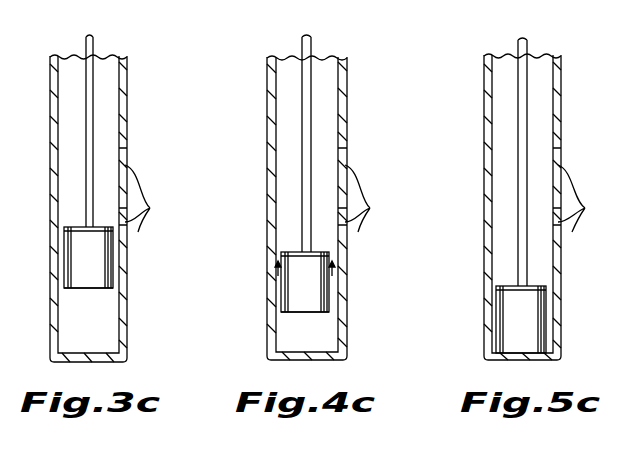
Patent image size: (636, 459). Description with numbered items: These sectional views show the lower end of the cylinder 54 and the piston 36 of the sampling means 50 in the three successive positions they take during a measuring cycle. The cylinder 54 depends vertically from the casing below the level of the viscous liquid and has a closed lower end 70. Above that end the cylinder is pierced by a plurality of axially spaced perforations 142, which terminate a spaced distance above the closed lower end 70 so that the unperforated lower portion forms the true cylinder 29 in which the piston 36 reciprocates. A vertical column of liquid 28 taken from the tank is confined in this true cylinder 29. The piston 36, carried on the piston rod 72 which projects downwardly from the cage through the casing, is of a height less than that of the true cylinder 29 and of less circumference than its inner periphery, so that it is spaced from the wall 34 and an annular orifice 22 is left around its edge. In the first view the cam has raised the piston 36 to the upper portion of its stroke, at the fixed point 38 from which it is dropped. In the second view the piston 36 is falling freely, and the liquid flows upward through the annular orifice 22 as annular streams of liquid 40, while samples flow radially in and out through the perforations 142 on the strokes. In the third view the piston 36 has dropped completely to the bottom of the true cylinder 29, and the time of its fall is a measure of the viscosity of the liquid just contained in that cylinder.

In FIG. 3C, the annular orifice 22 is at (117, 299).
In FIG. 4C, the annular orifice 22 is at (329, 308).
In FIG. 5C, the annular orifice 22 is at (546, 339).
In FIG. 3C, the vertical column of liquid 28 is at (116, 284).
In FIG. 4C, the vertical column of liquid 28 is at (331, 300).
In FIG. 5C, the vertical column of liquid 28 is at (497, 262).
In FIG. 3C, the true cylinder 29 is at (62, 336).
In FIG. 4C, the true cylinder 29 is at (278, 338).
In FIG. 5C, the true cylinder 29 is at (496, 312).
In FIG. 3C, the wall of the cylinder 34 is at (125, 331).
In FIG. 4C, the wall of the cylinder 34 is at (343, 333).
In FIG. 5C, the wall of the cylinder 34 is at (553, 326).
In FIG. 3C, the piston 36 is at (80, 268).
In FIG. 4C, the piston 36 is at (296, 288).
In FIG. 5C, the piston 36 is at (528, 305).
In FIG. 3C, the fixed point 38 is at (128, 283).
In FIG. 4C, the fixed point 38 is at (346, 281).
In FIG. 5C, the fixed point 38 is at (560, 285).
In FIG. 3C, the annular streams of liquid 40 is at (60, 250).
In FIG. 4C, the annular streams of liquid 40 is at (277, 301).
In FIG. 5C, the annular streams of liquid 40 is at (494, 339).
In FIG. 3C, the sampling means 50 is at (130, 127).
In FIG. 4C, the sampling means 50 is at (349, 112).
In FIG. 5C, the sampling means 50 is at (563, 115).
In FIG. 3C, the cylinder 54 is at (58, 128).
In FIG. 4C, the cylinder 54 is at (276, 125).
In FIG. 5C, the cylinder 54 is at (492, 127).
In FIG. 3C, the closed lower end 70 is at (100, 362).
In FIG. 4C, the closed lower end 70 is at (312, 360).
In FIG. 5C, the closed lower end 70 is at (525, 360).
In FIG. 3C, the piston rod 72 is at (86, 92).
In FIG. 4C, the piston rod 72 is at (302, 85).
In FIG. 5C, the piston rod 72 is at (518, 82).
In FIG. 3C, the perforations 142 is at (158, 198).
In FIG. 4C, the perforations 142 is at (380, 198).
In FIG. 5C, the perforations 142 is at (597, 198).